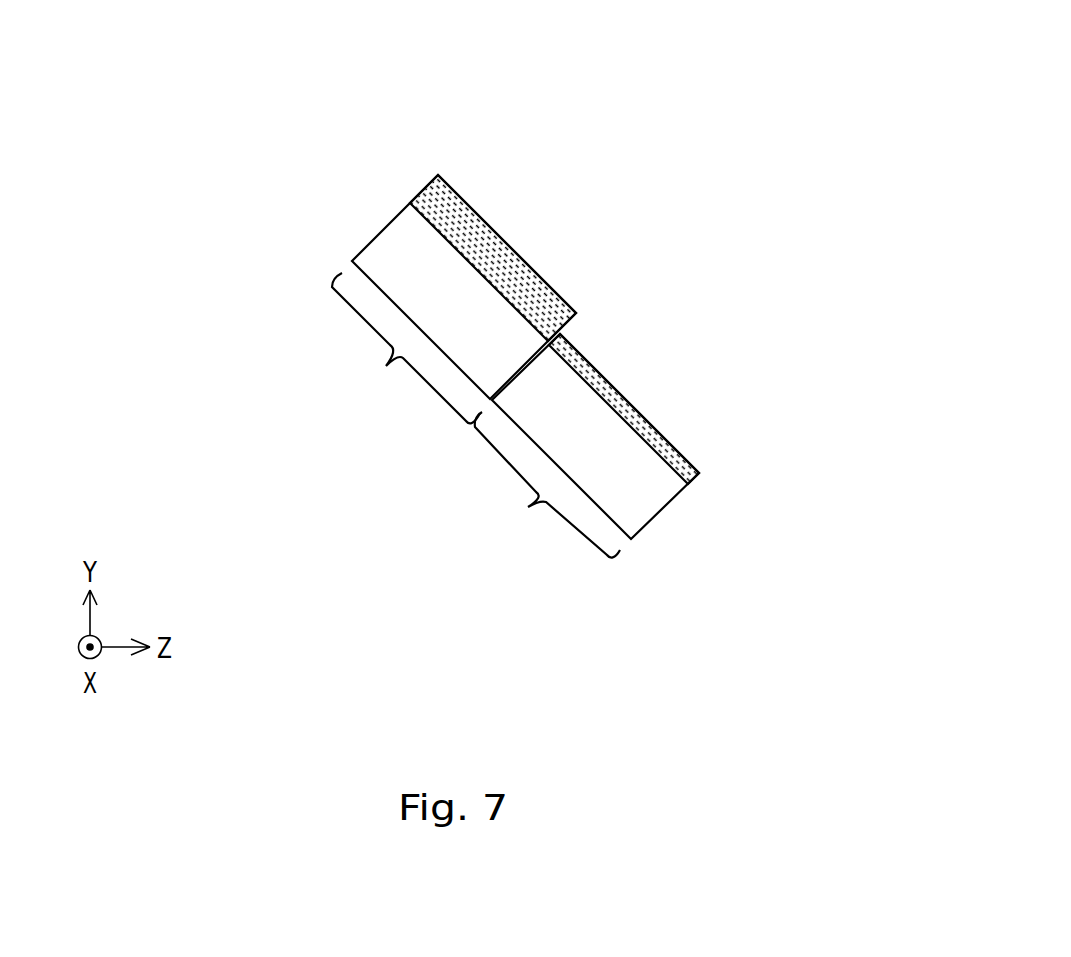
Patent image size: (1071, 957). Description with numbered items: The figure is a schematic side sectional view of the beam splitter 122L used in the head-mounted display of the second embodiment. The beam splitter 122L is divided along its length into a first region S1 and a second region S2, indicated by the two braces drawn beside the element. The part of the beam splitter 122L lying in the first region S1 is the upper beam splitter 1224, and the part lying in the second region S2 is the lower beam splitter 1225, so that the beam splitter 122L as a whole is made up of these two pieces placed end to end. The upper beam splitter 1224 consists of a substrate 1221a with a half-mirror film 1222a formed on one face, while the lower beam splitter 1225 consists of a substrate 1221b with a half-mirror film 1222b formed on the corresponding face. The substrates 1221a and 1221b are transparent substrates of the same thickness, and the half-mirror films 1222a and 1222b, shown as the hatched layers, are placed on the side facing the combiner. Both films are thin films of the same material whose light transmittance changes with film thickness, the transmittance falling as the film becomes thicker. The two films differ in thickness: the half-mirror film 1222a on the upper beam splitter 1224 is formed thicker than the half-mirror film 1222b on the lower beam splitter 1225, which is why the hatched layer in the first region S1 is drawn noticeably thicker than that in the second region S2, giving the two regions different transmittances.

The beam splitter 122L is at (351, 101).
The upper beam splitter 1224 is at (560, 192).
The lower beam splitter 1225 is at (695, 390).
The substrate 1221a is at (398, 235).
The half-mirror film 1222a is at (490, 185).
The substrate 1221b is at (655, 513).
The half-mirror film 1222b is at (633, 357).
The first region S1 is at (406, 348).
The second region S2 is at (547, 485).